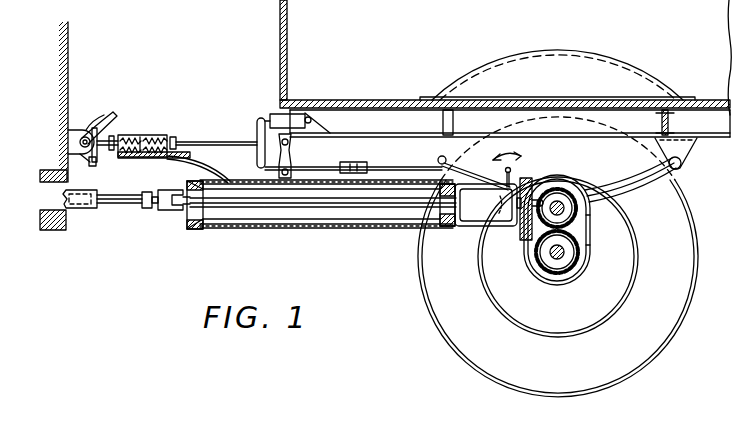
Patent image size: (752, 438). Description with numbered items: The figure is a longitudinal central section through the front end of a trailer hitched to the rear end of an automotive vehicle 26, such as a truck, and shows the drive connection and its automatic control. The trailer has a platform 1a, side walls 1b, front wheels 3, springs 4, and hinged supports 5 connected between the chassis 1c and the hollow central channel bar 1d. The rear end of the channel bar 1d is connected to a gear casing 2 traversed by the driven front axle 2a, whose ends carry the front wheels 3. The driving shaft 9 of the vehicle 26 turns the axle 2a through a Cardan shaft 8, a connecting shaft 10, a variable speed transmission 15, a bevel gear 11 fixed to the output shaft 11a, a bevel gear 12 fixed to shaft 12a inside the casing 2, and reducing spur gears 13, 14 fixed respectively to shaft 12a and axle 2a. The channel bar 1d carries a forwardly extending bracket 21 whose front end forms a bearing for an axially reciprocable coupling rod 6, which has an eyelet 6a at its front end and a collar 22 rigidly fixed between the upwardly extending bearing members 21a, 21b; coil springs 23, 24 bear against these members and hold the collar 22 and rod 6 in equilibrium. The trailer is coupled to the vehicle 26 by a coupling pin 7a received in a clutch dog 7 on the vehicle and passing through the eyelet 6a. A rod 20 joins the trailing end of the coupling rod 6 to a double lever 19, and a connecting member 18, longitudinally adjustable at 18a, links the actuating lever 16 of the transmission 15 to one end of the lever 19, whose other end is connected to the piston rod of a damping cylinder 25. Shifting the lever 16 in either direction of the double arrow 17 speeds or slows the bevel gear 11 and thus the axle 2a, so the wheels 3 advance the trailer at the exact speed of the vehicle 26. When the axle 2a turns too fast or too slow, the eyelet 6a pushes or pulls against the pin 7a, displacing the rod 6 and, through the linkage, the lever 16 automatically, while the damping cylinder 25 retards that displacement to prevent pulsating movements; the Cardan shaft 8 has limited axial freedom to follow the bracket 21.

The platform 1a is at (328, 100).
The side walls 1b is at (288, 33).
The chassis 1c is at (393, 118).
The central channel bar 1d is at (292, 232).
The gear casing 2 is at (592, 252).
The driven front axle 2a is at (555, 259).
The front wheels 3 is at (665, 322).
The springs 4 is at (680, 195).
The hinged supports 5 is at (291, 160).
The coupling rod 6 is at (110, 135).
The eyelet 6a is at (97, 128).
The clutch dog 7 is at (66, 143).
The coupling pin 7a is at (68, 158).
The Cardan shaft 8 is at (127, 201).
The driving shaft 9 is at (91, 208).
The connecting shaft 10 is at (265, 206).
The bevel gear 11 is at (525, 238).
The output shaft 11a is at (541, 185).
The bevel gear 12 is at (560, 196).
The shaft 12a is at (590, 186).
The spur gear 13 is at (594, 228).
The spur gear 14 is at (572, 268).
The variable speed transmission 15 is at (482, 214).
The actuating lever 16 is at (486, 226).
The double arrow 17 is at (498, 155).
The connecting member 18 is at (430, 168).
The adjustment 18a is at (368, 152).
The double lever 19 is at (256, 140).
The rod 20 is at (184, 164).
The bracket 21 is at (120, 158).
The bearing member 21a is at (127, 134).
The bearing member 21b is at (171, 146).
The collar 22 is at (140, 160).
The coil spring 23 is at (130, 139).
The coil spring 24 is at (158, 139).
The damping cylinder 25 is at (292, 118).
The automotive vehicle 26 is at (62, 97).